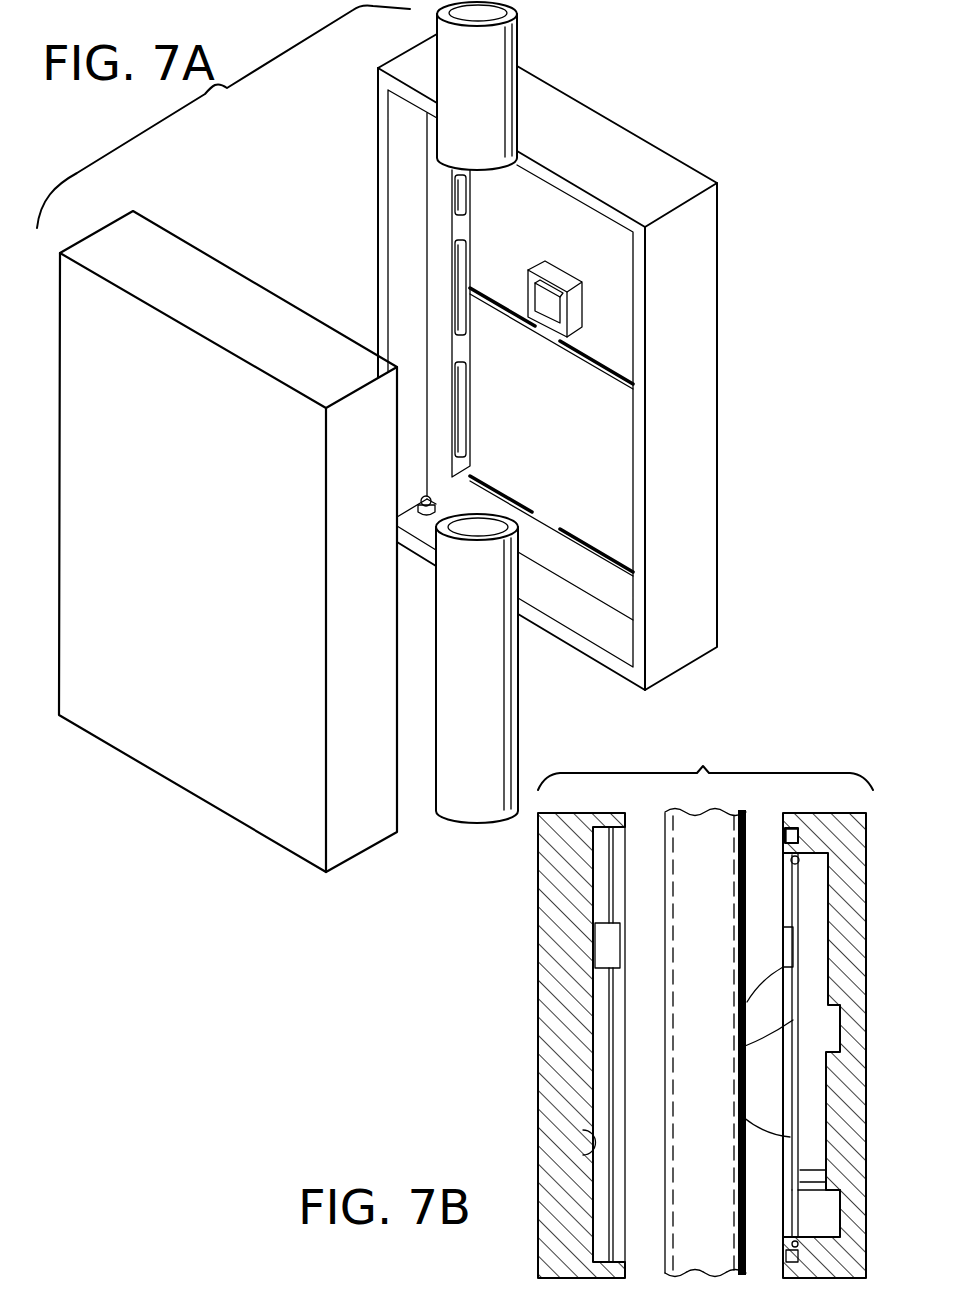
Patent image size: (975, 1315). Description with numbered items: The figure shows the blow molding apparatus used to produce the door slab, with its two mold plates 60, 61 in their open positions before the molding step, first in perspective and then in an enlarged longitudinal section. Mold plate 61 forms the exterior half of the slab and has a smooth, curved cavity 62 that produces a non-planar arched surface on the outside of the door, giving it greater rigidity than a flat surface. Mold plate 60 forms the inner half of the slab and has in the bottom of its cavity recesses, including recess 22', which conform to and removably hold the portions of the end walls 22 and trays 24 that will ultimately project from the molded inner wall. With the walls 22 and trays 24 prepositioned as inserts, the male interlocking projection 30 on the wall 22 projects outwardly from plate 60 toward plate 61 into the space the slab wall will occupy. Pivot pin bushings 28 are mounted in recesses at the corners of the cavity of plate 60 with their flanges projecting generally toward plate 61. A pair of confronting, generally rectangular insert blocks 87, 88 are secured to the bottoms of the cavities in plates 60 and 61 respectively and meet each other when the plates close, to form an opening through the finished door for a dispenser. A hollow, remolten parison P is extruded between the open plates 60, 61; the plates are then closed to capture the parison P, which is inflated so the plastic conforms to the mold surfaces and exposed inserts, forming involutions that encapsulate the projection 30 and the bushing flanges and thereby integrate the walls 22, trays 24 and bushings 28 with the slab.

In FIG. 7A, the mold plate 60 is at (645, 140).
In FIG. 7B, the mold plate 60 is at (829, 823).
In FIG. 7A, the mold plate 61 is at (246, 272).
In FIG. 7B, the mold plate 61 is at (580, 823).
In FIG. 7A, the parison P is at (497, 95).
In FIG. 7B, the parison P is at (670, 838).
In FIG. 7A, the end wall 22 is at (501, 323).
In FIG. 7B, the end wall 22 is at (763, 1045).
In FIG. 7B, the recess 22' is at (756, 1180).
In FIG. 7A, the tray 24 is at (547, 515).
In FIG. 7A, the pivot pin bushing 28 is at (418, 503).
In FIG. 7B, the pivot pin bushing 28 is at (797, 836).
In FIG. 7B, the male interlocking projection 30 is at (737, 1110).
In FIG. 7B, the curved cavity 62 is at (583, 1132).
In FIG. 7A, the insert block 87 is at (548, 272).
In FIG. 7B, the insert block 87 is at (788, 944).
In FIG. 7B, the insert block 88 is at (610, 941).